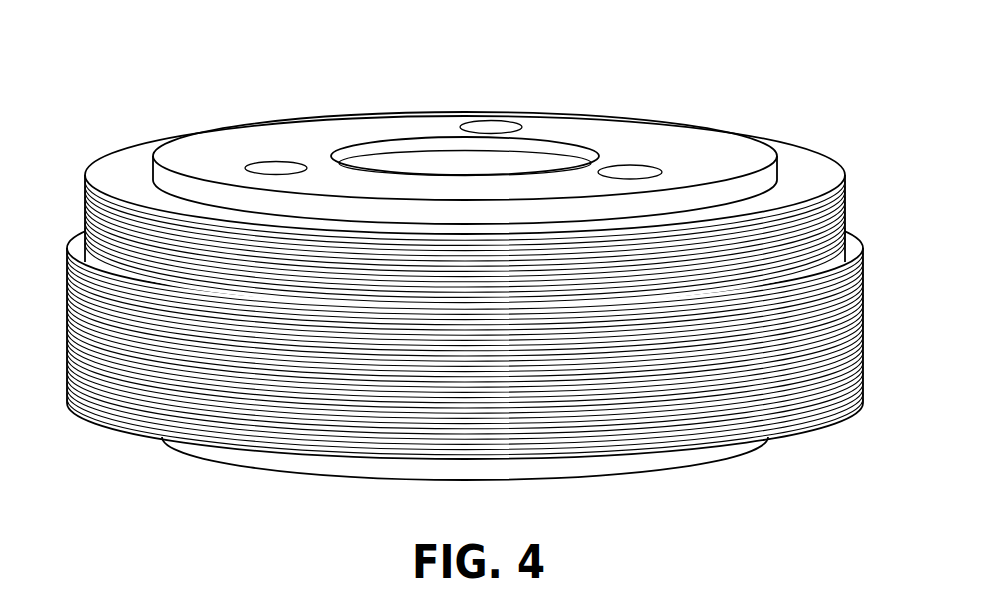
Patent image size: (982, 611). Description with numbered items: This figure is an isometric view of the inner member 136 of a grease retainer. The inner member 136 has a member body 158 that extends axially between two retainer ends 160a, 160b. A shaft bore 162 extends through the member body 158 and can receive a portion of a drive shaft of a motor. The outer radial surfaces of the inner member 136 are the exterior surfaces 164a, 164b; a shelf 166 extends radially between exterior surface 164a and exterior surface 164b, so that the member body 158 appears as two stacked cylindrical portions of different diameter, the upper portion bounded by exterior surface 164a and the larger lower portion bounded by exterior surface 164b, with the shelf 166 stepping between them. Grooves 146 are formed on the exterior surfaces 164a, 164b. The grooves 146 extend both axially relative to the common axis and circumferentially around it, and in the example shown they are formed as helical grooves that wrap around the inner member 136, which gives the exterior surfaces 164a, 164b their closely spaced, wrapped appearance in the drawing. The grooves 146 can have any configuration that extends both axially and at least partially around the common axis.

The inner member 136 is at (469, 246).
The groove 146 is at (469, 298).
The member body 158 is at (492, 211).
The retainer end 160a is at (795, 165).
The retainer end 160b is at (778, 437).
The shaft bore 162 is at (450, 148).
The exterior surface 164a is at (798, 220).
The exterior surface 164b is at (863, 312).
The shelf 166 is at (500, 323).